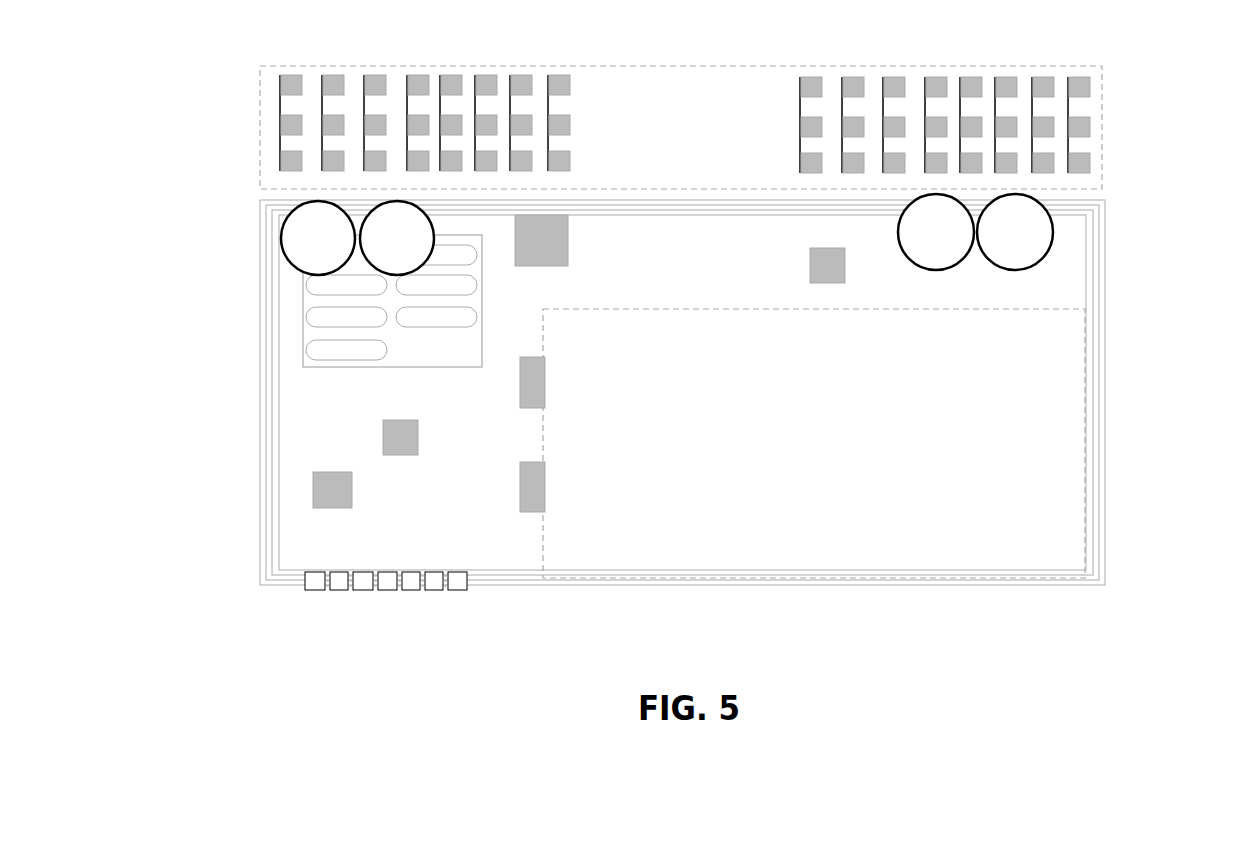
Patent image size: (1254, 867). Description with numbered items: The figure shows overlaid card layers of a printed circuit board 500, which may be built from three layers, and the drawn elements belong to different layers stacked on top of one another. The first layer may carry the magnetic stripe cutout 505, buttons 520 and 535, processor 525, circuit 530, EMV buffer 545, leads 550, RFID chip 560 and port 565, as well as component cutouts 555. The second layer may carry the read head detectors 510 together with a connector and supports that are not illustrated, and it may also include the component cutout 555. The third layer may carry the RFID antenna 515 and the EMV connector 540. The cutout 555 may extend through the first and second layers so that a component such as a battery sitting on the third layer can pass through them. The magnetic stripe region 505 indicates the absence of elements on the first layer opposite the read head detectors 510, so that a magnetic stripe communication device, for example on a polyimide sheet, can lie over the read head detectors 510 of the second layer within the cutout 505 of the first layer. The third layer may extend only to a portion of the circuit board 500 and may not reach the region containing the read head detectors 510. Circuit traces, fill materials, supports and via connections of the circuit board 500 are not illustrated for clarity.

The circuit board 500 is at (1209, 406).
The magnetic stripe cutout 505 is at (257, 90).
The read head detectors 510 is at (800, 113).
The antenna 515 is at (260, 247).
The buttons 520 is at (303, 257).
The processor 525 is at (568, 242).
The circuit 530 is at (810, 265).
The buttons 535 is at (1000, 268).
The EMV connector 540 is at (303, 362).
The EMV buffer 545 is at (383, 430).
The leads 550 is at (522, 465).
The component cutouts 555 is at (737, 310).
The RFID chip 560 is at (311, 495).
The port 565 is at (308, 592).